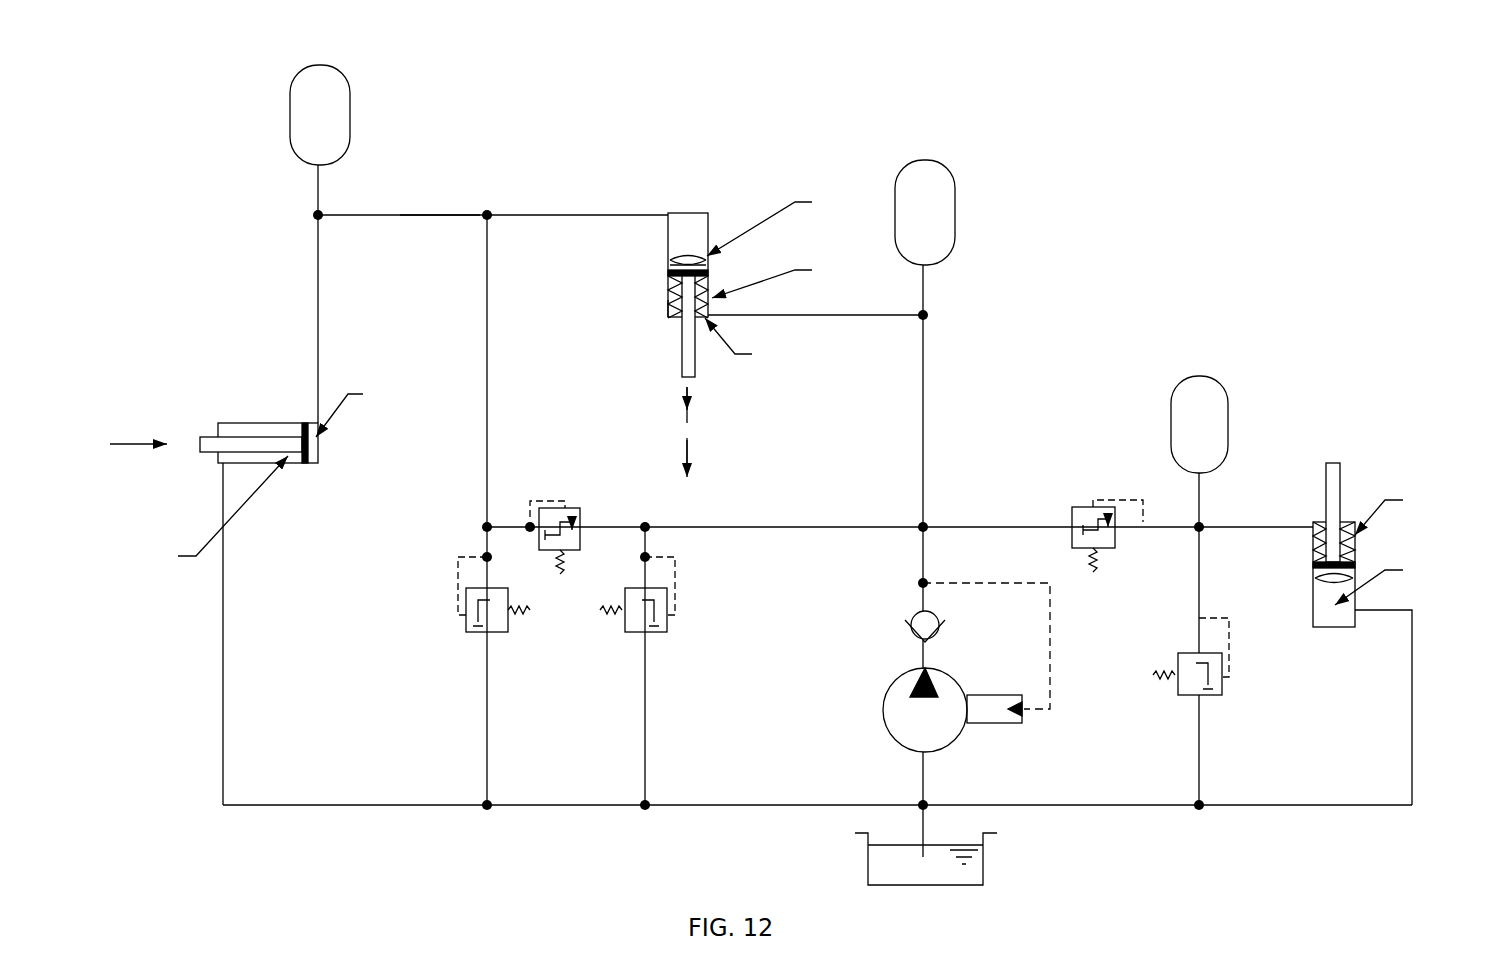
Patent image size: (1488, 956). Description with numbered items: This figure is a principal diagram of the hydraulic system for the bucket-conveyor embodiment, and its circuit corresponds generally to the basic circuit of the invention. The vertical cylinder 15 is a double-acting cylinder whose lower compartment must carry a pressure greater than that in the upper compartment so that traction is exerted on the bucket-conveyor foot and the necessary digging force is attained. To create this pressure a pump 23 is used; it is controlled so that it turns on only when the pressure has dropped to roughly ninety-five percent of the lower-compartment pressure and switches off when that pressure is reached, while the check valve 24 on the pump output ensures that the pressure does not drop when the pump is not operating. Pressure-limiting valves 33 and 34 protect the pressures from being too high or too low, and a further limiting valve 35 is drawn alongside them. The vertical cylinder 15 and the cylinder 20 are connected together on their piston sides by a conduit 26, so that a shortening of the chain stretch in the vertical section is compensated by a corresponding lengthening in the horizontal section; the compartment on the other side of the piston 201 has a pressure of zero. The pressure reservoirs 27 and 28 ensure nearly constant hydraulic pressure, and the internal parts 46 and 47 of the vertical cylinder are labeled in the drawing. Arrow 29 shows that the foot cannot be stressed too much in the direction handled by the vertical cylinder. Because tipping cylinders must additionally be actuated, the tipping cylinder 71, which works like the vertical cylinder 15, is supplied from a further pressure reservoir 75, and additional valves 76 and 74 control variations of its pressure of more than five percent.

The vertical cylinder 15 is at (697, 210).
The cylinder 20 is at (272, 418).
The piston 201 is at (306, 468).
The pump 23 is at (900, 715).
The check valve 24 is at (912, 628).
The conduit 26 is at (412, 213).
The pressure reservoir 27 is at (948, 185).
The pressure reservoir 28 is at (338, 147).
The arrow 29 is at (683, 461).
The pressure-limiting valve 33 is at (554, 524).
The pressure-limiting valve 34 is at (460, 610).
The pressure relief valve 35 is at (681, 610).
The valve piston 46 is at (670, 265).
The valve spring 47 is at (668, 310).
The tipping cylinder 71 is at (1400, 533).
The valve 74 is at (1110, 525).
The pressure reservoir 75 is at (1222, 400).
The valve 76 is at (1240, 667).